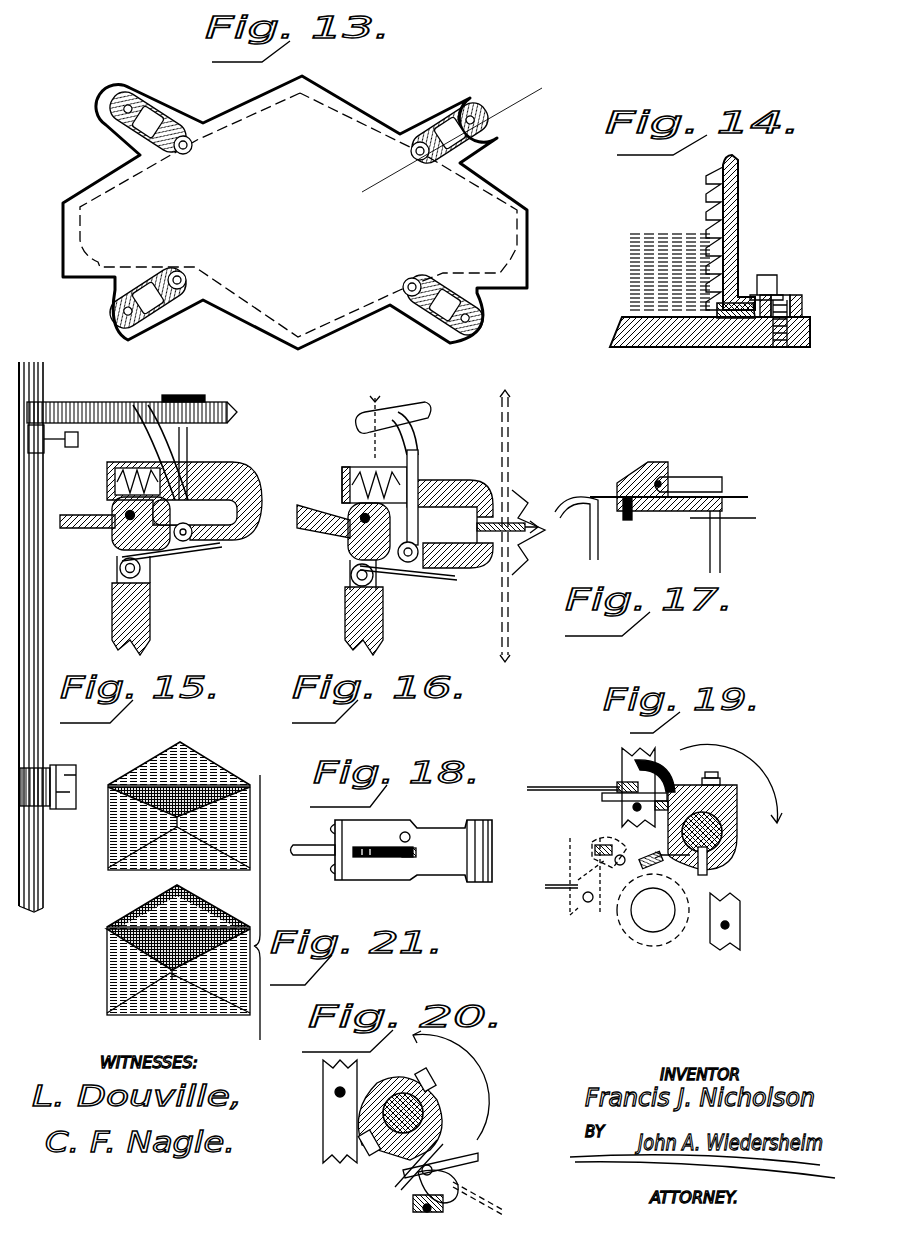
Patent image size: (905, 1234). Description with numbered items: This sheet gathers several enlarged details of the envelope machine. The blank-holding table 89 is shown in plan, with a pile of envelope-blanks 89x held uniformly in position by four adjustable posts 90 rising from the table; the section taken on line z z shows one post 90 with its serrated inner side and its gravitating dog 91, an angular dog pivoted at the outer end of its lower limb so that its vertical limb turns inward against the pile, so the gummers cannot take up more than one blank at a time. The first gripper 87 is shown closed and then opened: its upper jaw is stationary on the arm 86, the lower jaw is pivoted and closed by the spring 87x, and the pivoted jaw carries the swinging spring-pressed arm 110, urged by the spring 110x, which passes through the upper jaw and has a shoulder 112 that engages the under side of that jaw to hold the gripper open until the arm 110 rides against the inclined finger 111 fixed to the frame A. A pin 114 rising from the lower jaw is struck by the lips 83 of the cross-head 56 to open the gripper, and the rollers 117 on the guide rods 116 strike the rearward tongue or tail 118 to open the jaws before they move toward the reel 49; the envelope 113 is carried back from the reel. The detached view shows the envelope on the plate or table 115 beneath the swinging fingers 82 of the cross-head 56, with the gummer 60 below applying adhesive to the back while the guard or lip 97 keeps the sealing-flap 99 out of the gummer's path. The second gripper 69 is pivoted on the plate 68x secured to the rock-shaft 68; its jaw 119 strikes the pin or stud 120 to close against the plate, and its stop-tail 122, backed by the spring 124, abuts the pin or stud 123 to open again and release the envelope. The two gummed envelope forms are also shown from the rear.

In FIG. 16, the reel 49 is at (523, 526).
In FIG. 15, the cross-head 56 is at (132, 414).
In FIG. 17, the cross-head 56 is at (645, 467).
In FIG. 17, the gummer 60 is at (626, 521).
In FIG. 19, the rock-shaft 68 is at (737, 838).
In FIG. 20, the rock-shaft 68 is at (400, 1103).
In FIG. 19, the plate 68x is at (617, 785).
In FIG. 20, the plate 68x is at (460, 1185).
In FIG. 19, the gripper 69 is at (598, 761).
In FIG. 20, the gripper 69 is at (514, 1111).
In FIG. 17, the swinging finger 82 is at (683, 491).
In FIG. 15, the lip 83 is at (185, 390).
In FIG. 15, the arm 86 is at (146, 619).
In FIG. 16, the arm 86 is at (345, 621).
In FIG. 15, the gripper 87 is at (112, 494).
In FIG. 16, the gripper 87 is at (450, 585).
In FIG. 18, the gripper 87 is at (412, 868).
In FIG. 15, the spring 87x is at (172, 555).
In FIG. 16, the spring 87x is at (376, 580).
In FIG. 13, the table 89 is at (108, 190).
In FIG. 14, the table 89 is at (710, 329).
In FIG. 13, the envelope-blanks 89x is at (100, 245).
In FIG. 14, the envelope-blanks 89x is at (649, 273).
In FIG. 13, the adjustable post 90 is at (155, 118).
In FIG. 14, the adjustable post 90 is at (740, 212).
In FIG. 13, the gravitating dog 91 is at (186, 155).
In FIG. 14, the gravitating dog 91 is at (710, 196).
In FIG. 17, the guard or lip 97 is at (574, 515).
In FIG. 17, the sealing-flap 99 is at (576, 514).
In FIG. 15, the swinging spring-pressed arm 110 is at (148, 438).
In FIG. 16, the swinging spring-pressed arm 110 is at (392, 412).
In FIG. 18, the swinging spring-pressed arm 110 is at (383, 861).
In FIG. 15, the spring 110x is at (114, 496).
In FIG. 16, the spring 110x is at (346, 490).
In FIG. 16, the inclined finger 111 is at (420, 418).
In FIG. 15, the shoulder 112 is at (190, 480).
In FIG. 16, the shoulder 112 is at (477, 530).
In FIG. 18, the shoulder 112 is at (416, 853).
In FIG. 14, the envelope 113 is at (706, 233).
In FIG. 16, the envelope 113 is at (528, 548).
In FIG. 17, the envelope 113 is at (600, 492).
In FIG. 19, the envelope 113 is at (580, 832).
In FIG. 20, the envelope 113 is at (489, 1197).
In FIG. 15, the pin 114 is at (187, 455).
In FIG. 16, the pin 114 is at (420, 456).
In FIG. 18, the pin 114 is at (410, 832).
In FIG. 17, the plate or table 115 is at (686, 535).
In FIG. 15, the rod 116 is at (48, 637).
In FIG. 15, the roller 117 is at (54, 799).
In FIG. 15, the tongue or tail 118 is at (141, 529).
In FIG. 16, the tongue or tail 118 is at (376, 541).
In FIG. 18, the tongue or tail 118 is at (309, 860).
In FIG. 19, the jaw 119 is at (625, 798).
In FIG. 20, the jaw 119 is at (450, 1162).
In FIG. 19, the pin or stud 120 is at (640, 812).
In FIG. 20, the pin or stud 120 is at (335, 1095).
In FIG. 19, the stop-tail 122 is at (655, 772).
In FIG. 20, the stop-tail 122 is at (420, 1190).
In FIG. 19, the pin or stud 123 is at (735, 925).
In FIG. 20, the pin or stud 123 is at (423, 1210).
In FIG. 19, the spring 124 is at (676, 785).
In FIG. 20, the spring 124 is at (395, 1183).
In FIG. 19, the frame A is at (633, 762).
In FIG. 20, the frame A is at (330, 1131).
In FIG. 13, the section line z is at (451, 136).